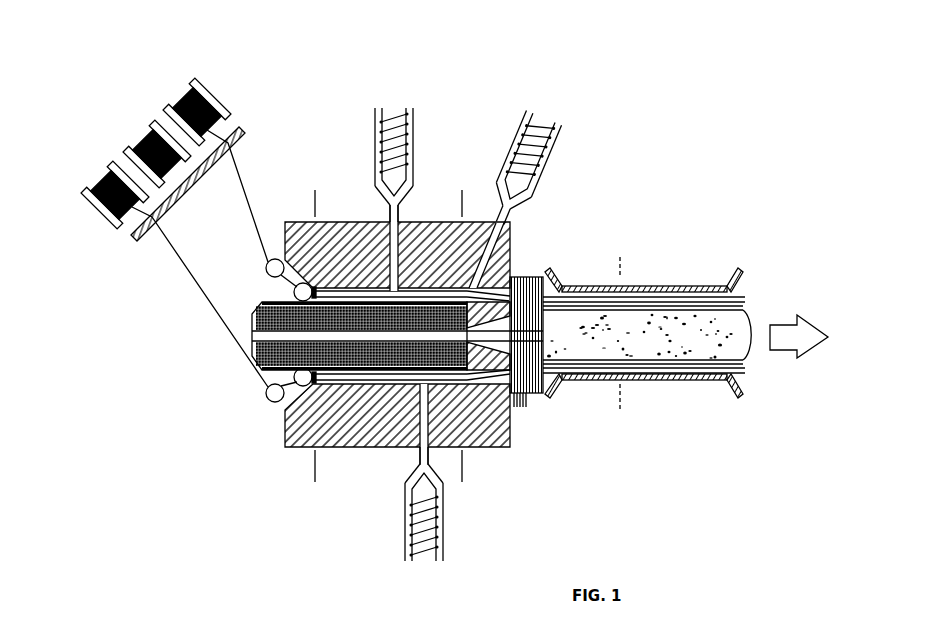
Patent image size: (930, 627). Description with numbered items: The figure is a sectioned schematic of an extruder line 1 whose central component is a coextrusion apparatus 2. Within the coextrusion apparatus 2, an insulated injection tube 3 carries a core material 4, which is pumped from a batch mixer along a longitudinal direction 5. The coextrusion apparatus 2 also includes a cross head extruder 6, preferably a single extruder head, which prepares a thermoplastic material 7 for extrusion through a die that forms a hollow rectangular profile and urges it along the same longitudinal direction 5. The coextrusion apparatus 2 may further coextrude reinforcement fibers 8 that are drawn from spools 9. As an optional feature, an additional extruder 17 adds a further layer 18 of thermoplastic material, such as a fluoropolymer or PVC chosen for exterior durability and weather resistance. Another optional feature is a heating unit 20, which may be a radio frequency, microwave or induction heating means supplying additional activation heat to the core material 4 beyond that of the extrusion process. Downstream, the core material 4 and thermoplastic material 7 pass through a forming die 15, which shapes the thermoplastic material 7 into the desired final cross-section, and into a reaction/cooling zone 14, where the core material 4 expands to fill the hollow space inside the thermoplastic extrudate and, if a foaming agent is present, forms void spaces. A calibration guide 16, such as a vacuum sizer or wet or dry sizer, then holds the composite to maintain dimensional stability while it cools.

The extruder line 1 is at (451, 292).
The coextrusion apparatus 2 is at (464, 343).
The insulated injection tube 3 is at (342, 315).
The core material 4 is at (346, 360).
The longitudinal direction 5 is at (799, 353).
The cross head extruder 6 is at (441, 334).
The thermoplastic material 7 is at (561, 326).
The reinforcement fibers 8 is at (314, 244).
The spools 9 is at (156, 125).
The reaction/cooling zone 14 is at (691, 320).
The forming die 15 is at (537, 314).
The calibration guide 16 is at (650, 338).
The extruder 17 is at (559, 194).
The layer 18 is at (691, 308).
The heating unit 20 is at (574, 434).